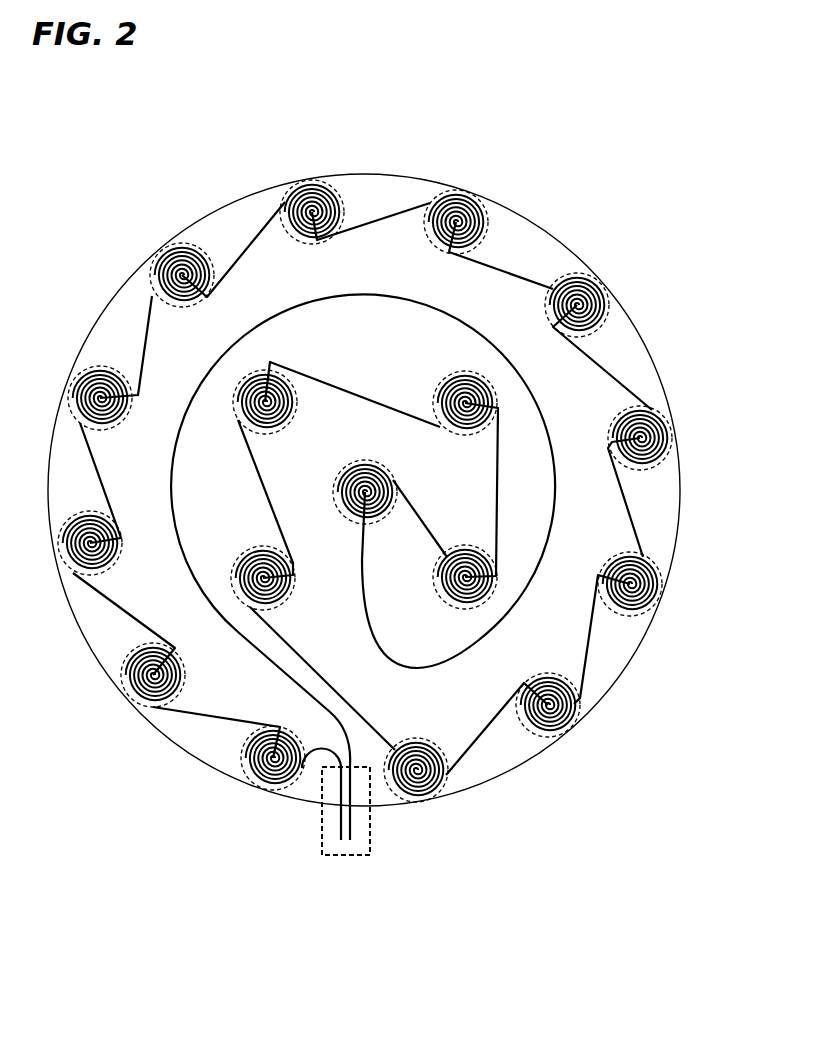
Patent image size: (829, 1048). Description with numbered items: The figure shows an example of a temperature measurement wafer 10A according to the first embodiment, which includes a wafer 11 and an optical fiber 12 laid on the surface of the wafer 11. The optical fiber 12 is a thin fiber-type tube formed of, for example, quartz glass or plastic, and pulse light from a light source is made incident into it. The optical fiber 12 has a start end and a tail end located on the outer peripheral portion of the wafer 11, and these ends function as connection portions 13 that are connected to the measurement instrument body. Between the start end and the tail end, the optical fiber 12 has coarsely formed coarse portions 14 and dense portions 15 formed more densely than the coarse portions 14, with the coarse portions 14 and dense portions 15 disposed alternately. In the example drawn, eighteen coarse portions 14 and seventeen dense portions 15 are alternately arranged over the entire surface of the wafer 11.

The temperature measurement wafer 10A is at (110, 173).
The wafer 11 is at (537, 221).
The optical fiber 12 is at (755, 379).
The connection portions 13 is at (388, 833).
The coarse portion 14 is at (606, 374).
The dense portion 15 is at (672, 475).